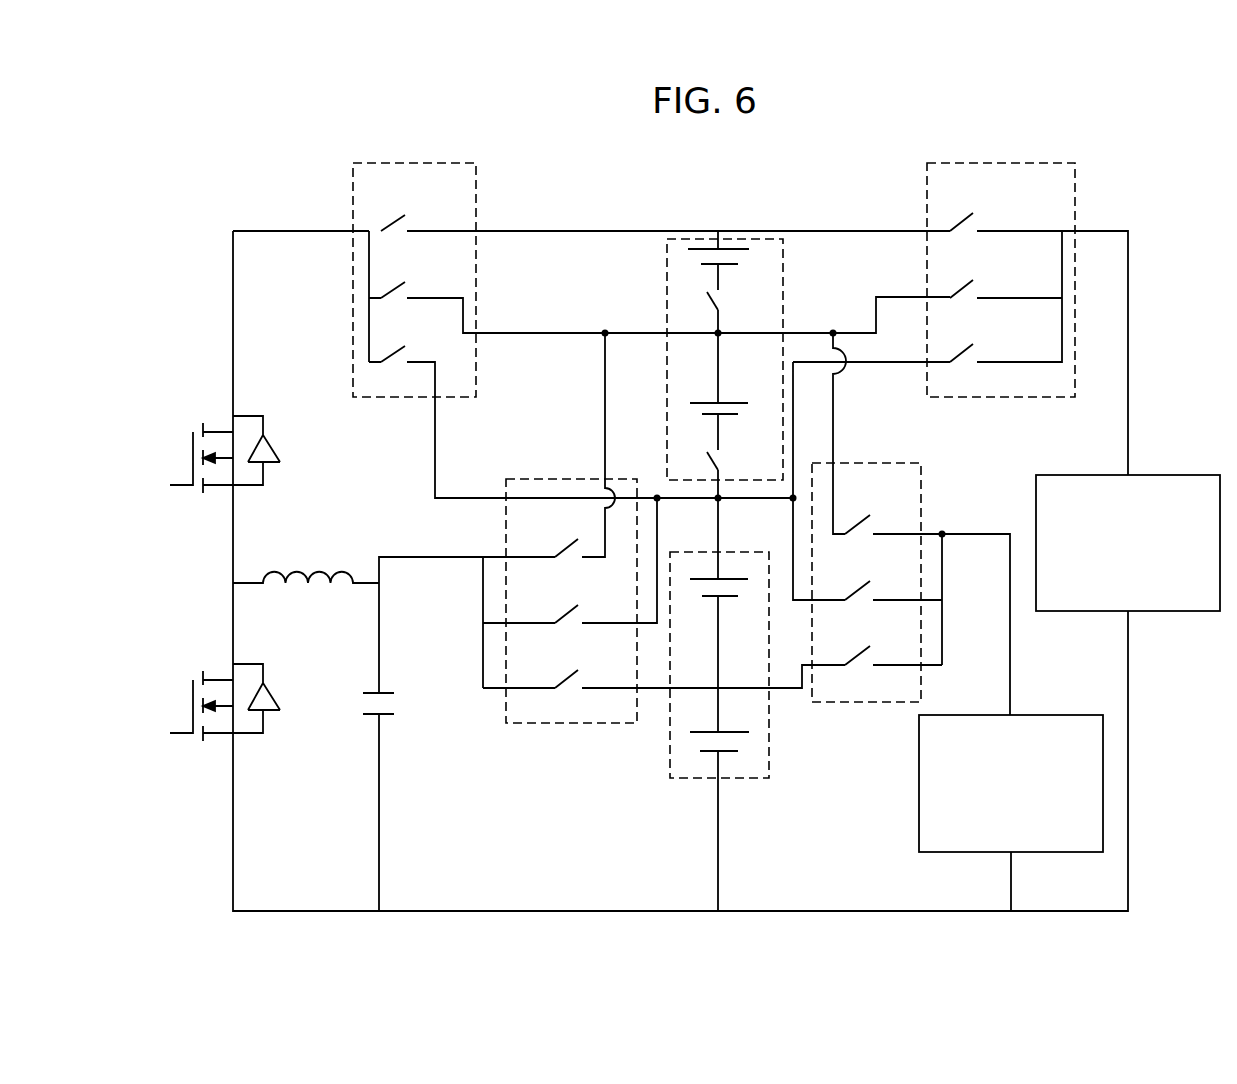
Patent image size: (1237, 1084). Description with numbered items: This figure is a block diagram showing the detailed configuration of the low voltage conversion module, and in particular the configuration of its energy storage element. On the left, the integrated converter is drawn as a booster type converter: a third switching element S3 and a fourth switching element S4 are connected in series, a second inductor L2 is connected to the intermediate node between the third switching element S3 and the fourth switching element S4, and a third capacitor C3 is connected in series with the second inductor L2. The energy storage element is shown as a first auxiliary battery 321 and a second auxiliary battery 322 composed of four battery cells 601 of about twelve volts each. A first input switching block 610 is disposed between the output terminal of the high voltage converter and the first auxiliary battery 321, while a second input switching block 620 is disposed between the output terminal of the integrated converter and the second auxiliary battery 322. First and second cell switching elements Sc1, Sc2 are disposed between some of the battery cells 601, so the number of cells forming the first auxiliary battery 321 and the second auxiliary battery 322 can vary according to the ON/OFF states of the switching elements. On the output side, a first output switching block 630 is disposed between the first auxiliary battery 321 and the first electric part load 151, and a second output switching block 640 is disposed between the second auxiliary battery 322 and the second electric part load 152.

The battery cell 601 is at (783, 300).
The first input switching block 610 is at (476, 195).
The second input switching block 620 is at (543, 478).
The first output switching block 630 is at (1075, 197).
The second output switching block 640 is at (921, 484).
The first auxiliary battery 321 is at (783, 275).
The second auxiliary battery 322 is at (769, 752).
The first electric part load 151 is at (1168, 475).
The second electric part load 152 is at (1103, 790).
The third switching element S3 is at (264, 418).
The fourth switching element S4 is at (264, 666).
The second inductor L2 is at (345, 555).
The third capacitor C3 is at (379, 785).
The first cell switching element Sc1 is at (740, 300).
The second cell switching element Sc2 is at (731, 436).